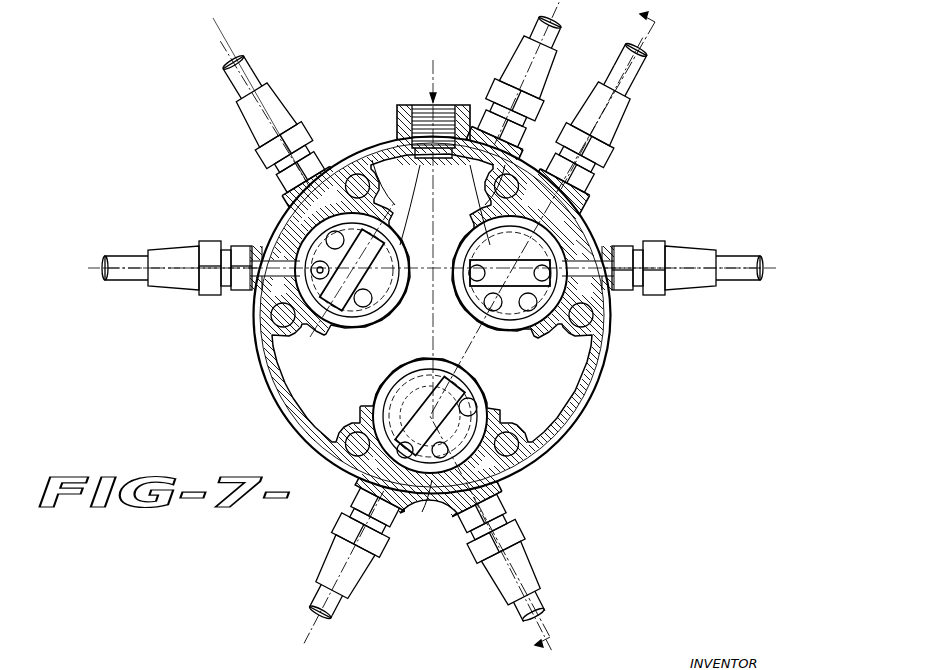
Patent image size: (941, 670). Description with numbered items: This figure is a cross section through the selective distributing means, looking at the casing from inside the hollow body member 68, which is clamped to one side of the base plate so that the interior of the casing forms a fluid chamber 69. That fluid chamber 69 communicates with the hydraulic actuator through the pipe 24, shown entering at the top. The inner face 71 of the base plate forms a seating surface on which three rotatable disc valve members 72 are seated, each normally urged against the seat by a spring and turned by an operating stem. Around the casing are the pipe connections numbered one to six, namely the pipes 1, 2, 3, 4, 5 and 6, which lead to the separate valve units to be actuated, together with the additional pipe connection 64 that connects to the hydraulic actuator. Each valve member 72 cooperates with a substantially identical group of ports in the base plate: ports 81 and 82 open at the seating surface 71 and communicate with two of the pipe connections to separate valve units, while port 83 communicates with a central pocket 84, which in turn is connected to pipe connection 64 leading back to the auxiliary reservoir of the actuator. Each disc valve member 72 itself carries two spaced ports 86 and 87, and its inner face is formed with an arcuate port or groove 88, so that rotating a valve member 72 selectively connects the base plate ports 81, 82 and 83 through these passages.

The pipe 1 is at (628, 81).
The pipe 2 is at (742, 272).
The pipe 3 is at (540, 598).
The pipe 4 is at (322, 606).
The pipe 5 is at (124, 270).
The pipe 6 is at (248, 82).
The pipe 24 is at (415, 112).
The pipe connection 64 is at (548, 50).
The hollow body member 68 is at (596, 360).
The fluid chamber 69 is at (600, 388).
The inner face 71 is at (312, 405).
The rotatable disc valve member 72 is at (352, 327).
The port 81 is at (288, 228).
The port 82 is at (295, 212).
The port 83 is at (385, 298).
The central pocket 84 is at (380, 355).
The port 86 is at (318, 280).
The port 87 is at (382, 215).
The arcuate port or groove 88 is at (402, 240).